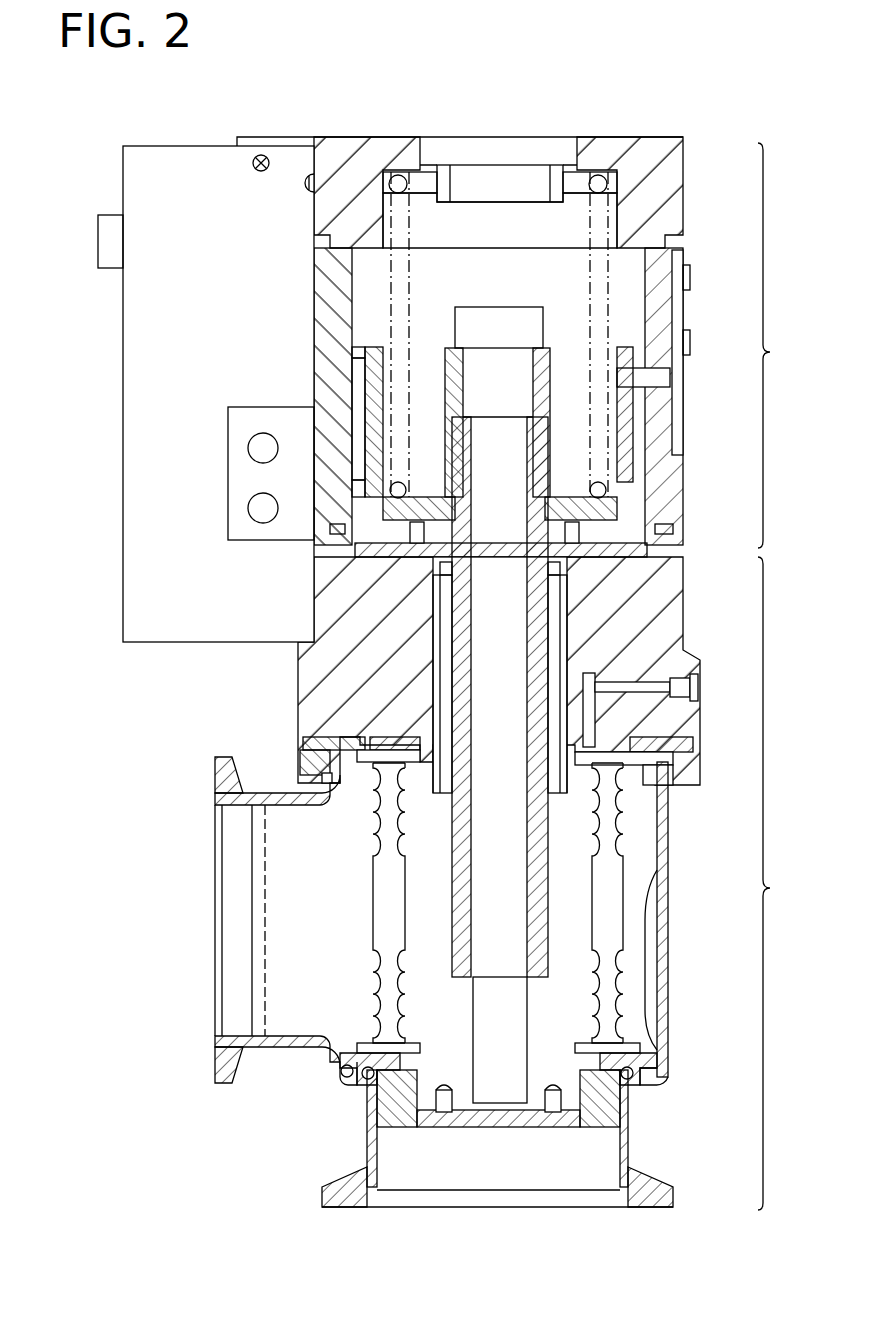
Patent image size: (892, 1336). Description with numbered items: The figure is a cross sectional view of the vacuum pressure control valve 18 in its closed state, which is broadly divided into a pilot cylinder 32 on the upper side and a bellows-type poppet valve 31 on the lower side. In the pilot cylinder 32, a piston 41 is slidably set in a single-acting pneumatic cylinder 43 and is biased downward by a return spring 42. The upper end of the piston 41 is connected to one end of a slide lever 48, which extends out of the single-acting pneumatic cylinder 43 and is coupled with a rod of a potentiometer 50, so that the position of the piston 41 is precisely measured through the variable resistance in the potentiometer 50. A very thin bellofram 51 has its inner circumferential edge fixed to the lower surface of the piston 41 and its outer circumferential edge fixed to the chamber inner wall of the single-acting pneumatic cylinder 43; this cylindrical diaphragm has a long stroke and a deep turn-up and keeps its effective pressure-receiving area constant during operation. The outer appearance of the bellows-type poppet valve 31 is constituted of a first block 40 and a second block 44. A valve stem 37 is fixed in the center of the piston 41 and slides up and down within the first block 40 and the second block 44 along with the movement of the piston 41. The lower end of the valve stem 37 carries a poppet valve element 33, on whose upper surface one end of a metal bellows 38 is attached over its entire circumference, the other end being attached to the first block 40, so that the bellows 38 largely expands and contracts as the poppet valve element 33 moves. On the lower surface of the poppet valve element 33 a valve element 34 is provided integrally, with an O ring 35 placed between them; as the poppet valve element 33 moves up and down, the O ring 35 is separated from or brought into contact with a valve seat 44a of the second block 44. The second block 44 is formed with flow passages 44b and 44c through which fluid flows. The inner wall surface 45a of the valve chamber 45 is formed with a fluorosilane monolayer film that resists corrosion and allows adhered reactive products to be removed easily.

The vacuum pressure control valve 18 is at (646, 92).
The bellows-type poppet valve 31 is at (782, 883).
The pilot cylinder 32 is at (780, 345).
The poppet valve element 33 is at (643, 1062).
The valve element 34 is at (393, 1115).
The O ring 35 is at (632, 1080).
The valve stem 37 is at (533, 987).
The metal bellows 38 is at (630, 812).
The first block 40 is at (665, 620).
The piston 41 is at (620, 510).
The return spring 42 is at (387, 223).
The single-acting pneumatic cylinder 43 is at (663, 477).
The second block 44 is at (660, 1015).
The valve seat 44a is at (340, 1085).
The flow passage 44b is at (618, 1150).
The flow passage 44c is at (262, 1020).
The valve chamber 45 is at (645, 880).
The inner wall surface of the valve chamber 45a is at (642, 853).
The slide lever 48 is at (358, 371).
The potentiometer 50 is at (144, 180).
The bellofram 51 is at (643, 513).